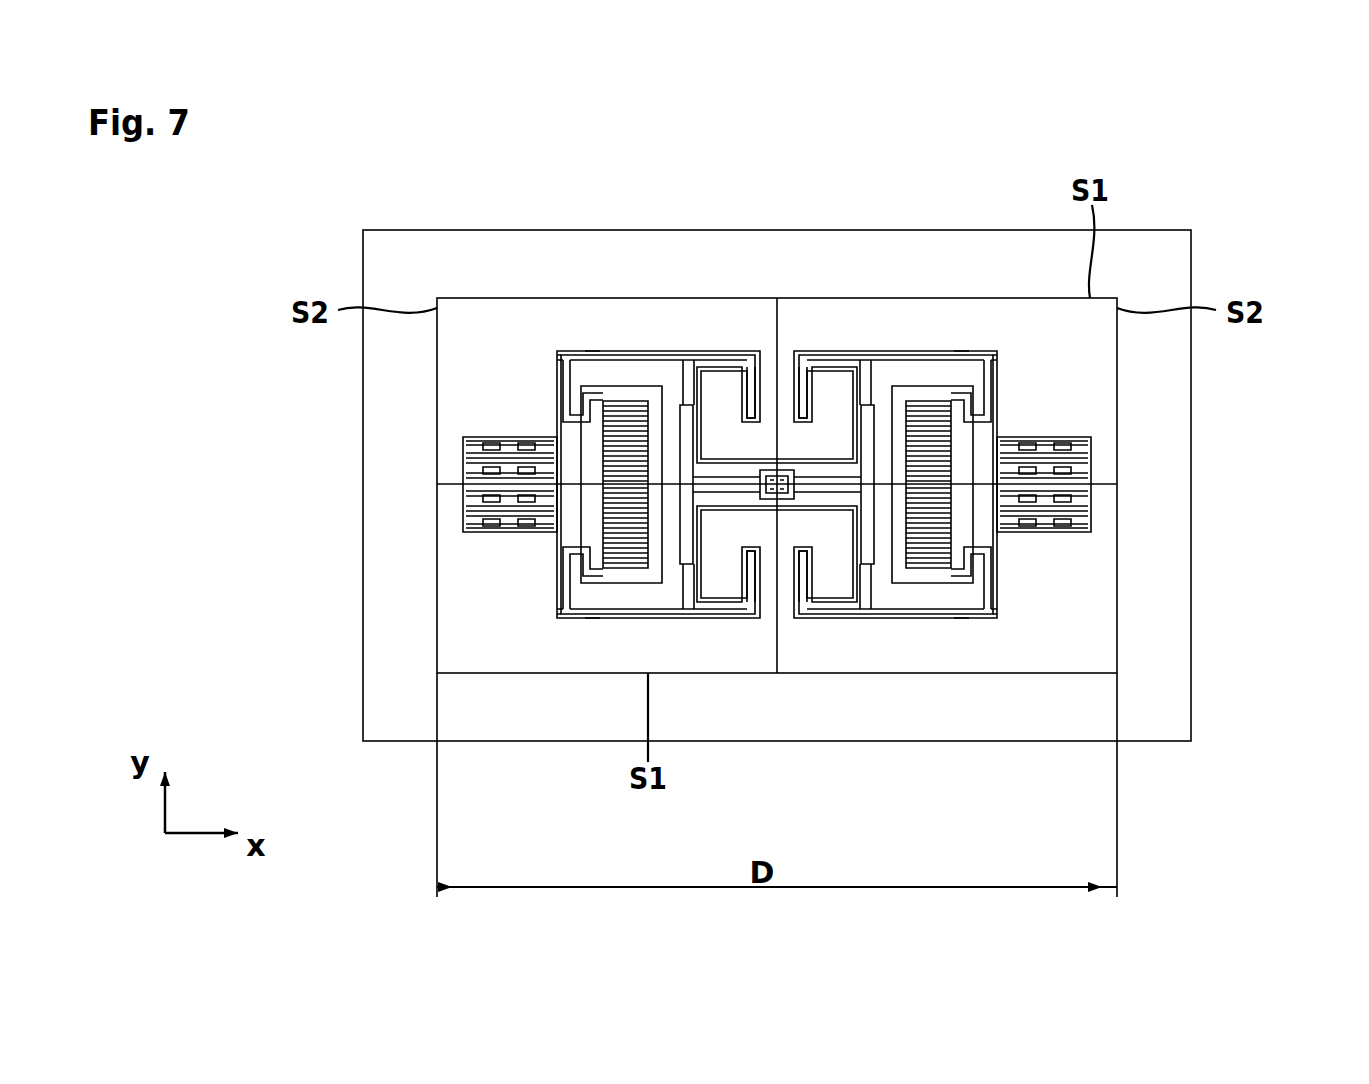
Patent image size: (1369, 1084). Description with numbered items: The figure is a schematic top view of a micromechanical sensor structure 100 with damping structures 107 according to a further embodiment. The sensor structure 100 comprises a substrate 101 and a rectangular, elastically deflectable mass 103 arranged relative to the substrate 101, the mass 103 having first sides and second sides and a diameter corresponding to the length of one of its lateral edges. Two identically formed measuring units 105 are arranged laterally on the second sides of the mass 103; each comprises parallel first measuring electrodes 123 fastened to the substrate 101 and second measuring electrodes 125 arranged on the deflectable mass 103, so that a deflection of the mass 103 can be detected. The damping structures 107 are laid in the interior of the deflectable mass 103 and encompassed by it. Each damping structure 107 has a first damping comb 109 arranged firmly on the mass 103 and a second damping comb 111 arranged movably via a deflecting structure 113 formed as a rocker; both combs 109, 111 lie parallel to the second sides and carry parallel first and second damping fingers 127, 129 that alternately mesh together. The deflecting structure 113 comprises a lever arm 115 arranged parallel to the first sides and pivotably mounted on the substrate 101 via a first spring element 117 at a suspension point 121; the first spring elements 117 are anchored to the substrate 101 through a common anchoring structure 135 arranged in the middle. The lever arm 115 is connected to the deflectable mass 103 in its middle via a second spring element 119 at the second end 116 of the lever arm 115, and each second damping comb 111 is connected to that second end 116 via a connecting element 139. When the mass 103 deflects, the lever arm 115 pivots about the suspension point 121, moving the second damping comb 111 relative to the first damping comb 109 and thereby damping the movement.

The micromechanical sensor structure 100 is at (343, 250).
The substrate 101 is at (1191, 718).
The deflectable mass 103 is at (1055, 408).
The measuring unit 105 is at (450, 498).
The damping structure 107 is at (618, 340).
The first damping comb 109 is at (625, 450).
The second damping comb 111 is at (653, 450).
The deflecting structure 113 is at (942, 340).
The lever arm 115 is at (593, 362).
The second end of the lever arm 116 is at (557, 360).
The first spring element 117 is at (684, 390).
The second spring element 119 is at (802, 387).
The suspension point 121 is at (688, 405).
The first measuring electrodes 123 is at (473, 455).
The second measuring electrodes 125 is at (482, 508).
The first damping fingers 127 is at (605, 555).
The second damping fingers 129 is at (603, 570).
The anchoring structure 135 is at (583, 450).
The connecting element 139 is at (560, 370).